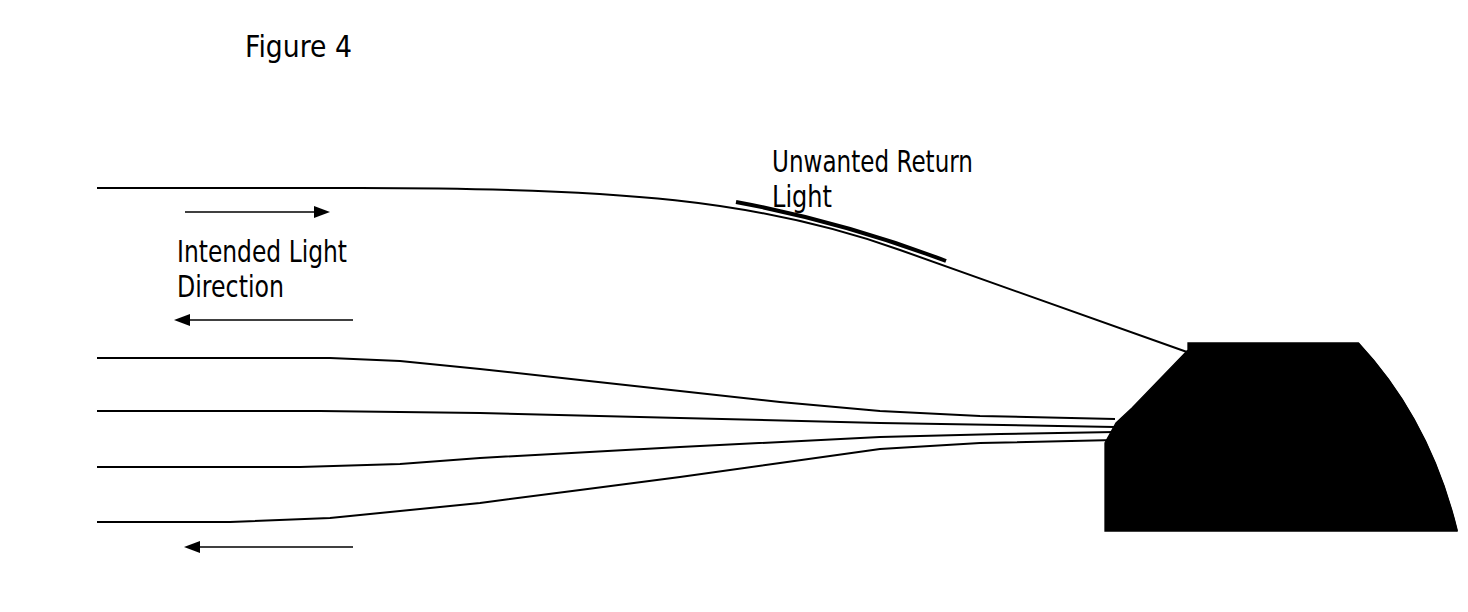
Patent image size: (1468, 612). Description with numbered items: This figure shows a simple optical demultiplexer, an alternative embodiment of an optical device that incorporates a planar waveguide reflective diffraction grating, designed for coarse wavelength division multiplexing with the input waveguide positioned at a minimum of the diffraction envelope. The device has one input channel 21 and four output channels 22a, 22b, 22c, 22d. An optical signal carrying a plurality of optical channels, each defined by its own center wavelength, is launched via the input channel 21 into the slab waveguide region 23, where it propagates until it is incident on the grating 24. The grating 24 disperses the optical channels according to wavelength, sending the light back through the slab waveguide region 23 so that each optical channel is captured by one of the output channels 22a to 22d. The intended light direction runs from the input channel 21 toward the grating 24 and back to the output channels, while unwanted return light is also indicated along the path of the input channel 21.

The input channel 21 is at (642, 250).
The output channel 22a is at (606, 371).
The output channel 22b is at (606, 400).
The output channel 22c is at (606, 446).
The output channel 22d is at (606, 494).
The slab waveguide region 23 is at (1158, 552).
The grating 24 is at (1407, 437).